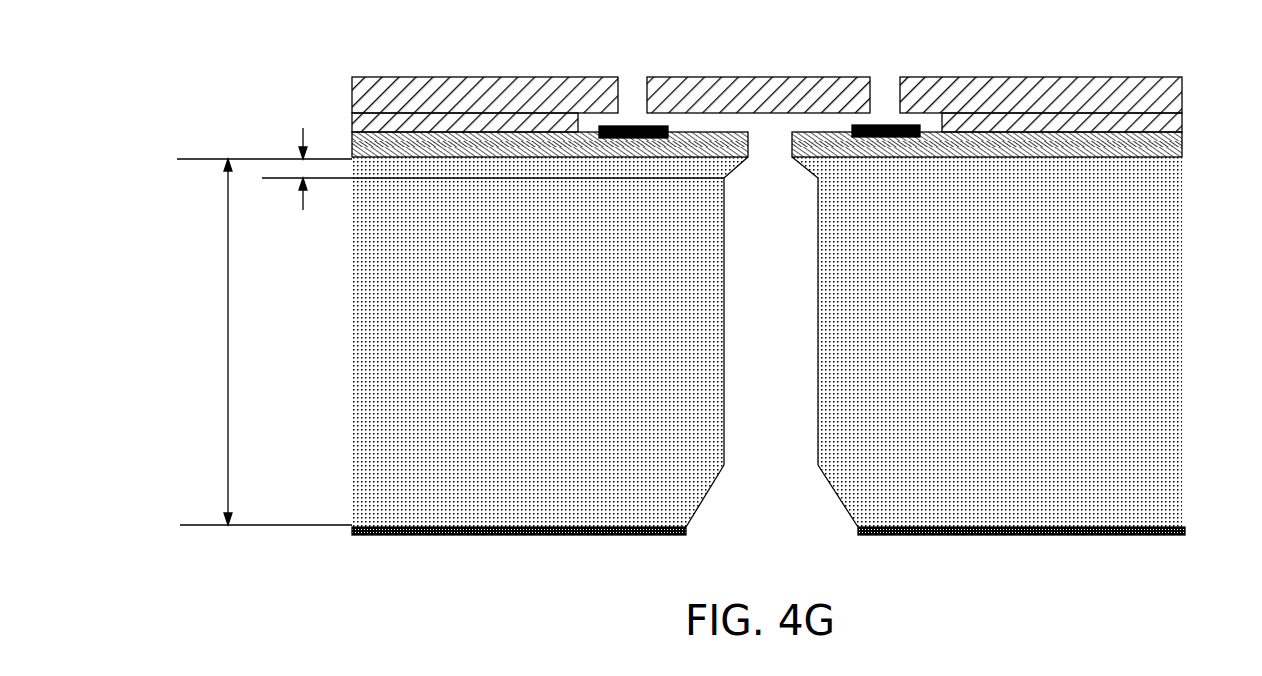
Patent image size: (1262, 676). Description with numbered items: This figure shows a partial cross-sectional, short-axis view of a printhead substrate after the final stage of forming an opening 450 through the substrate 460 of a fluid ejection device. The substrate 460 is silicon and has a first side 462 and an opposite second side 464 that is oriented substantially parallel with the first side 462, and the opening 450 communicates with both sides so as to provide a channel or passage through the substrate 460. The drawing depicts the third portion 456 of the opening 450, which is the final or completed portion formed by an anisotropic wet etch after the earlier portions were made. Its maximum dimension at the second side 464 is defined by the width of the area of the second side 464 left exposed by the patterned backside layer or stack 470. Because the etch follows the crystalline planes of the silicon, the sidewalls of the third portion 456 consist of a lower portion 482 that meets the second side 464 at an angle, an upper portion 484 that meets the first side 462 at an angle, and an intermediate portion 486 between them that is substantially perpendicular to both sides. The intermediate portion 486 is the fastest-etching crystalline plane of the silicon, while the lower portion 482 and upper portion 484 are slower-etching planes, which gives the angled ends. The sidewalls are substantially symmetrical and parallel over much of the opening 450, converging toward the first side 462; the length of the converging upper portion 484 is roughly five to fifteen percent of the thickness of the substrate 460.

The opening 450 is at (719, 315).
The third portion of the opening 456 is at (772, 342).
The substrate 460 is at (1163, 320).
The first side 462 is at (1072, 153).
The second side 464 is at (1103, 534).
The patterned backside layer or stack 470 is at (503, 535).
The lower portion 482 is at (840, 499).
The upper portion 484 is at (810, 170).
The intermediate portion 486 is at (818, 295).